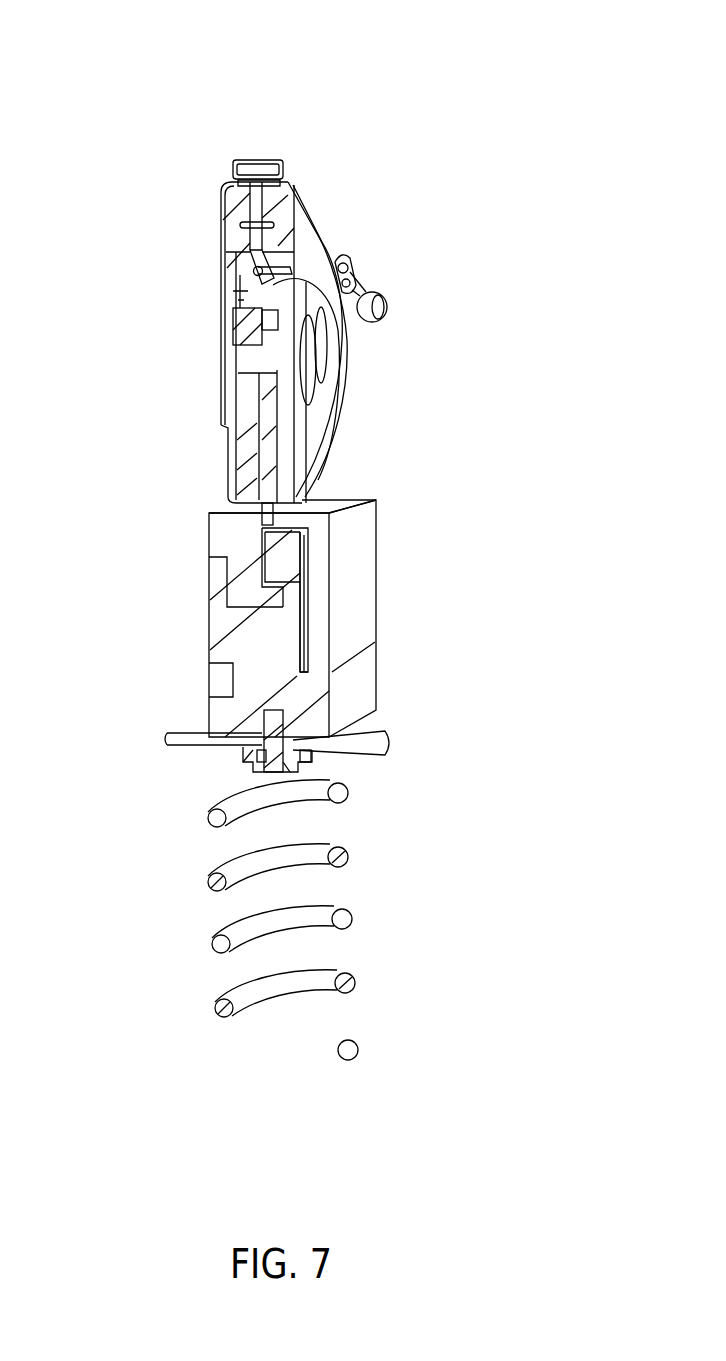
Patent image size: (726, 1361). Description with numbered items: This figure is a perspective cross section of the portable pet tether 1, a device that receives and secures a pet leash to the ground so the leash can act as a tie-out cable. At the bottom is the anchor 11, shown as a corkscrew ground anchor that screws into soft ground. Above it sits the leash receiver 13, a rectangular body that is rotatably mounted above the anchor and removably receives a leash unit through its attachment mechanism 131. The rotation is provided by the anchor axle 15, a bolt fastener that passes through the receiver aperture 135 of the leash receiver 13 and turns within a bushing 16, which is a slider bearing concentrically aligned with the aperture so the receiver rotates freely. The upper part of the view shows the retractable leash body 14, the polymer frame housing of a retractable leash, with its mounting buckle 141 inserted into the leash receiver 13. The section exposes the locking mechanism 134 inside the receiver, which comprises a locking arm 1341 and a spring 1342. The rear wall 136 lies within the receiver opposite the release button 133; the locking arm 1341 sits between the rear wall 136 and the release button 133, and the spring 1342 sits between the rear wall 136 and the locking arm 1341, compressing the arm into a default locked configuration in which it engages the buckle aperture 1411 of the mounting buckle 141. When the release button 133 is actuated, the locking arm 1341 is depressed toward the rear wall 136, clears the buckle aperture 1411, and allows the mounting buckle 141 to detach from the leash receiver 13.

The portable pet tether 1 is at (586, 95).
The anchor 11 is at (407, 983).
The leash receiver 13 is at (348, 481).
The attachment mechanism 131 is at (258, 514).
The release button 133 is at (212, 652).
The locking mechanism 134 is at (255, 561).
The locking arm 1341 is at (290, 552).
The spring 1342 is at (306, 612).
The receiver aperture 135 is at (263, 722).
The rear wall 136 is at (317, 662).
The retractable leash body 14 is at (337, 187).
The mounting buckle 141 is at (261, 534).
The buckle aperture 1411 is at (345, 498).
The anchor axle 15 is at (308, 770).
The bushing 16 is at (233, 763).